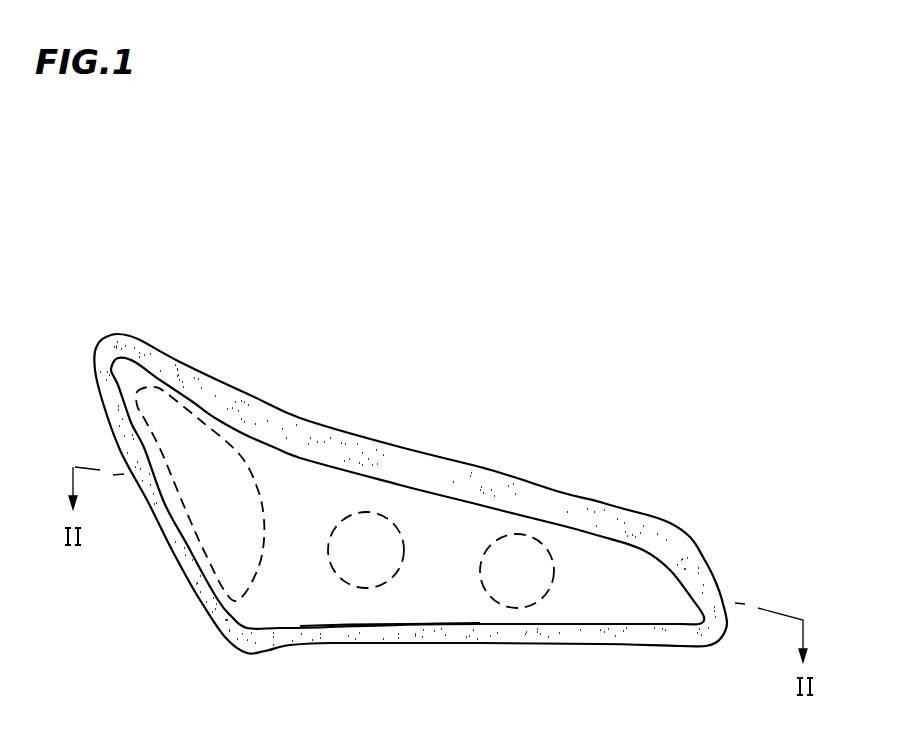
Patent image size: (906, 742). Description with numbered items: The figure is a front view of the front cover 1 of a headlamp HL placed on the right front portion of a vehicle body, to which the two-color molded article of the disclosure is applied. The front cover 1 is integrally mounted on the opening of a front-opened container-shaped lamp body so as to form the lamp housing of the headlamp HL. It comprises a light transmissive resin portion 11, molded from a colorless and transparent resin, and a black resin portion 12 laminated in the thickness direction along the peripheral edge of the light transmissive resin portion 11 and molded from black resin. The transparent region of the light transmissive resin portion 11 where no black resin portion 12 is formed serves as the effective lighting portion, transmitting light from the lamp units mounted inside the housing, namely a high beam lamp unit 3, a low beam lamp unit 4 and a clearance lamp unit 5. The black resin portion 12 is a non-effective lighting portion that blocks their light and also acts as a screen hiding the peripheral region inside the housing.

The front cover 1 is at (603, 503).
The black resin portion 12 is at (357, 452).
The clearance lamp unit 5 is at (190, 424).
The low beam lamp unit 4 is at (385, 583).
The high beam lamp unit 3 is at (547, 595).
The light transmissive resin portion 11 is at (312, 607).
The headlamp HL is at (493, 414).